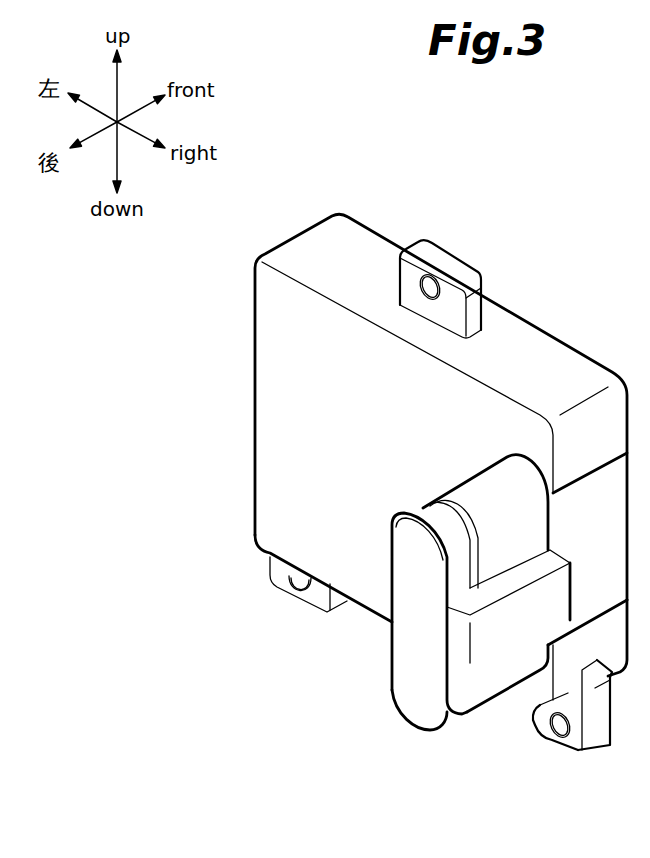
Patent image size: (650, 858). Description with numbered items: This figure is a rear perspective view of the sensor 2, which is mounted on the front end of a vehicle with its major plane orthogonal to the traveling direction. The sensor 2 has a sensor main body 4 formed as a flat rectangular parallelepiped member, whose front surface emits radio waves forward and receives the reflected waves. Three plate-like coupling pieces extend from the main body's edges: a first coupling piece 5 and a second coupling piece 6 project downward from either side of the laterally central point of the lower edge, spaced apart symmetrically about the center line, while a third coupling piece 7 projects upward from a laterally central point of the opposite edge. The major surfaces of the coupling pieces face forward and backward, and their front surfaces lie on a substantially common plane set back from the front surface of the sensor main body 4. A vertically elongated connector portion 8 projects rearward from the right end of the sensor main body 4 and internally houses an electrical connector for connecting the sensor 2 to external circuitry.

The sensor 2 is at (314, 218).
The sensor main body 4 is at (550, 360).
The first coupling piece 5 is at (578, 747).
The second coupling piece 6 is at (320, 598).
The third coupling piece 7 is at (447, 262).
The connector portion 8 is at (413, 703).